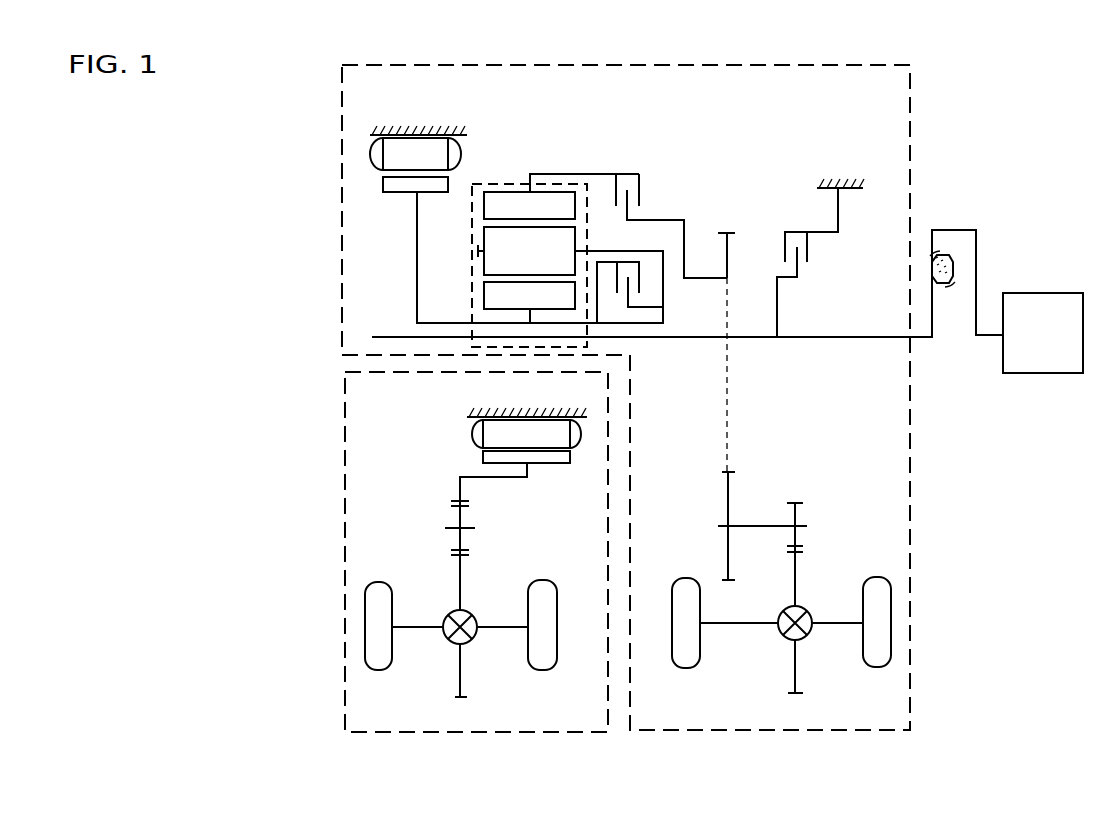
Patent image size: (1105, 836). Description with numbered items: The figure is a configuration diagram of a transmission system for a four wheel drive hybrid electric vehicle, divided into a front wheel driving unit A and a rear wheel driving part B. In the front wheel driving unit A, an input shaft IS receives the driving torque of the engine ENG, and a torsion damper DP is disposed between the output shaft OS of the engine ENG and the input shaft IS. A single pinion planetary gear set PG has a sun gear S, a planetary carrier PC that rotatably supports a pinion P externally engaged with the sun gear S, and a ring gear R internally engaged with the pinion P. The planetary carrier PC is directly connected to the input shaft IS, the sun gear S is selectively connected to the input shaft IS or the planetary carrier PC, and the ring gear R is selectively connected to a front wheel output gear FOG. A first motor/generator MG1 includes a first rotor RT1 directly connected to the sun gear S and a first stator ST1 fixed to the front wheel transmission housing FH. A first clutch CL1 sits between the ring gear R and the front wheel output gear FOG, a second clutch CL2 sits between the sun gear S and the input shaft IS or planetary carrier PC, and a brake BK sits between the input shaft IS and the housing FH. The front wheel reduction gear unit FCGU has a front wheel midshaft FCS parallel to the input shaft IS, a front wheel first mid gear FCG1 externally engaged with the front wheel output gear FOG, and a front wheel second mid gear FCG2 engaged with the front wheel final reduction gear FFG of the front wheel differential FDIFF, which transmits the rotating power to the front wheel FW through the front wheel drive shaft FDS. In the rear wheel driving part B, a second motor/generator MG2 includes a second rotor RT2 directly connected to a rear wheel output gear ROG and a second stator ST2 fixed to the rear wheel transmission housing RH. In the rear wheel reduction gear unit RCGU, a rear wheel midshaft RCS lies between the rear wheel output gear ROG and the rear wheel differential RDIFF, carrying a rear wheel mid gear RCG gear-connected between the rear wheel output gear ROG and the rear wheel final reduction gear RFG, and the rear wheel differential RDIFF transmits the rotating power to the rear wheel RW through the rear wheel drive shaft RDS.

The front wheel driving unit A is at (920, 467).
The rear wheel driving part B is at (335, 539).
The input shaft IS is at (680, 340).
The front wheel transmission housing FH is at (425, 133).
The first motor/generator MG1 is at (545, 202).
The first stator ST1 is at (383, 151).
The first rotor RT1 is at (388, 186).
The planetary gear set PG is at (567, 223).
The ring gear R is at (561, 197).
The pinion P is at (570, 251).
The sun gear S is at (529, 302).
The planetary carrier PC is at (600, 251).
The first clutch CL1 is at (647, 185).
The second clutch CL2 is at (646, 278).
The front wheel output gear FOG is at (731, 258).
The brake BK is at (794, 216).
The torsion damper DP is at (942, 241).
The engine ENG is at (1043, 333).
The output shaft OS is at (984, 338).
The second motor/generator MG2 is at (469, 491).
The rear wheel transmission housing RH is at (555, 415).
The second stator ST2 is at (490, 433).
The second rotor RT2 is at (487, 457).
The rear wheel reduction gear unit RCGU is at (481, 515).
The rear wheel output gear ROG is at (457, 487).
The rear wheel mid gear RCG is at (457, 518).
The rear wheel midshaft RCS is at (468, 525).
The rear wheel final reduction gear RFG is at (457, 578).
The rear wheel differential RDIFF is at (444, 643).
The rear wheel drive shaft RDS is at (493, 630).
The rear wheel RW is at (550, 645).
The front wheel reduction gear unit FCGU is at (769, 508).
The front wheel first mid gear FCG1 is at (727, 503).
The front wheel midshaft FCS is at (765, 522).
The front wheel second mid gear FCG2 is at (802, 514).
The front wheel final reduction gear FFG is at (793, 582).
The front wheel differential FDIFF is at (774, 643).
The front wheel drive shaft FDS is at (835, 628).
The front wheel FW is at (877, 667).